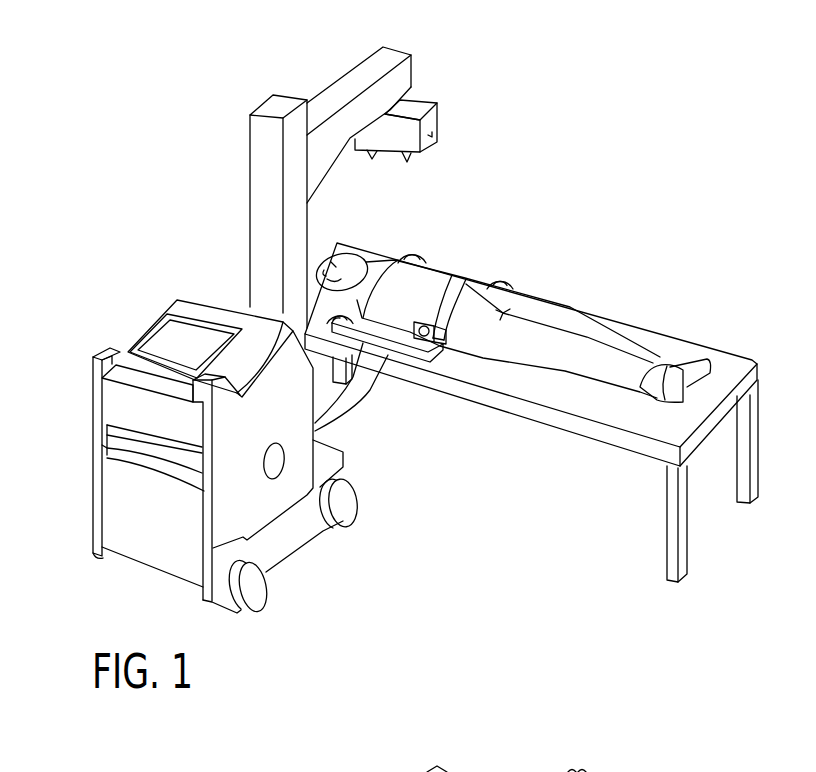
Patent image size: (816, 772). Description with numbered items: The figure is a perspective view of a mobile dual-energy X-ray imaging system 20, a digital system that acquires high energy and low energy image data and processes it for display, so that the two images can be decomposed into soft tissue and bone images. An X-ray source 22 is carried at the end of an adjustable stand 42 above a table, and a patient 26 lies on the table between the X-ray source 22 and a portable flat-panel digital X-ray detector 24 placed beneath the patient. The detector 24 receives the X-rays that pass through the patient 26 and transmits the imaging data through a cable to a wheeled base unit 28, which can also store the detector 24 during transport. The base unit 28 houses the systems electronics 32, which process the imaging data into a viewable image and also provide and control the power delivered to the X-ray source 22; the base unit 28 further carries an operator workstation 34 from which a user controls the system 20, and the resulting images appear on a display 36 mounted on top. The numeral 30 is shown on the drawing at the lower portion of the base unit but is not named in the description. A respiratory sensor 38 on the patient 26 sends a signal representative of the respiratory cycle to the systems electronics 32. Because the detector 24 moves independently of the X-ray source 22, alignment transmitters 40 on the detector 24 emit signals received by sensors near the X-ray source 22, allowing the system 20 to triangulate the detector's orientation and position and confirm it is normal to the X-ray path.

The mobile dual-energy X-ray imaging system 20 is at (297, 48).
The X-ray source 22 is at (434, 101).
The portable flat-panel digital X-ray detector 24 is at (410, 354).
The patient 26 is at (538, 313).
The base unit 28 is at (98, 415).
The wheeled base 30 is at (343, 462).
The systems electronics 32 is at (264, 491).
The operator workstation 34 is at (157, 408).
The display 36 is at (167, 338).
The respiratory sensor 38 is at (437, 275).
The alignment transmitters 40 is at (441, 346).
The adjustable stand 42 is at (259, 173).